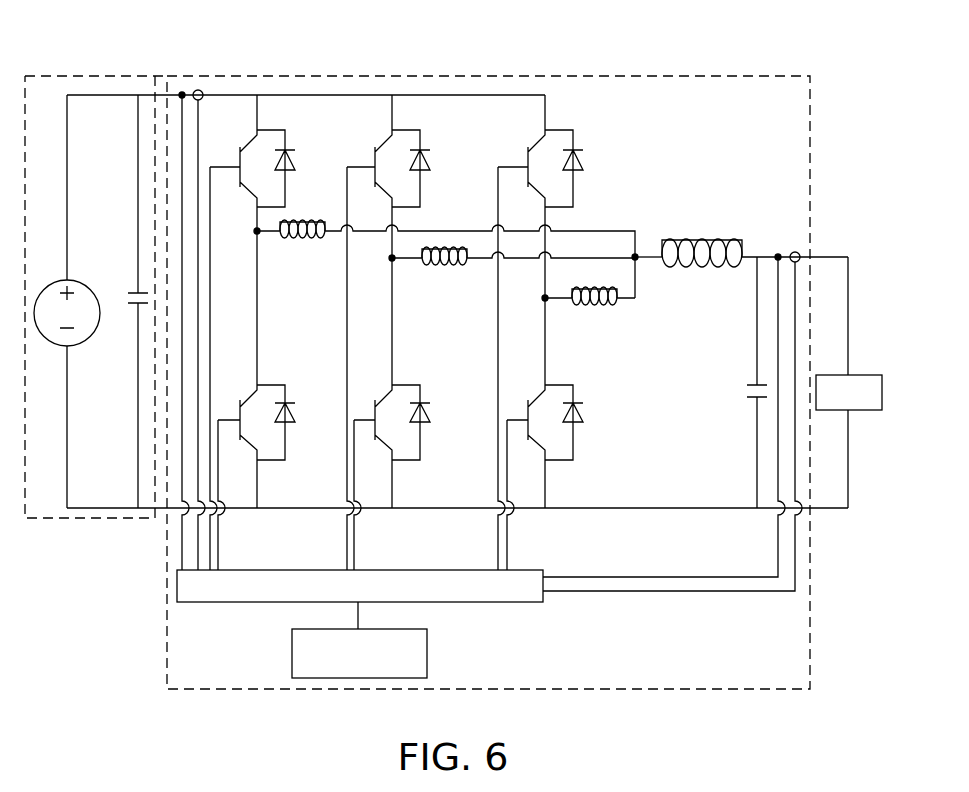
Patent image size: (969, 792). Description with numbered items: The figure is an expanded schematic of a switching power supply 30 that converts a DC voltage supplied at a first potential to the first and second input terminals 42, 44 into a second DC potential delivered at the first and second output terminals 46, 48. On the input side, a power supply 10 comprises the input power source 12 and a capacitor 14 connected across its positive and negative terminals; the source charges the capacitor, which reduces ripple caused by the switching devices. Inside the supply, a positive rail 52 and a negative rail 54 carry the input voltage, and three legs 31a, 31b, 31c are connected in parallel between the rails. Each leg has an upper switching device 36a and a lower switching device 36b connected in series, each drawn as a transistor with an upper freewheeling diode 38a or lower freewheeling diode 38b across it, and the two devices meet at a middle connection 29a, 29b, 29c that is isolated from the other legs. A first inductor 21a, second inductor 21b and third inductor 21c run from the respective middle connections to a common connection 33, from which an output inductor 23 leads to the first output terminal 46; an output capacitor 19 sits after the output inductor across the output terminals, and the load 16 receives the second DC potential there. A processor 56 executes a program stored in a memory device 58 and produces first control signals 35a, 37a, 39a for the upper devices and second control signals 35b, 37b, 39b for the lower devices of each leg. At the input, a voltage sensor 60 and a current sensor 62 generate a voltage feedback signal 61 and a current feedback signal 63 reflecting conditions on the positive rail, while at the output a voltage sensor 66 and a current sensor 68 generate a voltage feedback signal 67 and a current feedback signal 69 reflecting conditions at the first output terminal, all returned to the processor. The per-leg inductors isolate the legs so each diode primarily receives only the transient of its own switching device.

The power supply 10 is at (95, 76).
The input power source 12 is at (47, 286).
The capacitor 14 is at (135, 291).
The load 16 is at (865, 374).
The output capacitor 19 is at (751, 403).
The first inductor 21a is at (309, 218).
The second inductor 21b is at (439, 270).
The third inductor 21c is at (586, 310).
The output inductor 23 is at (701, 233).
The middle connection of the first leg 29a is at (249, 232).
The middle connection of the second leg 29b is at (387, 259).
The middle connection of the third leg 29c is at (539, 299).
The switching power supply 30 is at (712, 75).
The first leg 31a is at (258, 91).
The second leg 31b is at (393, 91).
The third leg 31c is at (546, 91).
The common connection 33 is at (640, 251).
The first control signal 35a is at (219, 547).
The second control signal 35b is at (220, 552).
The upper switching device 36a is at (248, 149).
The lower switching device 36b is at (248, 396).
The first control signal 37a is at (345, 545).
The second control signal 37b is at (357, 545).
The upper freewheeling diode 38a is at (291, 156).
The lower freewheeling diode 38b is at (297, 413).
The first control signal 39a is at (496, 545).
The second control signal 39b is at (510, 545).
The first input terminal 42 is at (165, 91).
The second input terminal 44 is at (152, 521).
The first output terminal 46 is at (812, 256).
The second output terminal 48 is at (816, 512).
The positive rail 52 is at (322, 94).
The negative rail 54 is at (292, 506).
The processor 56 is at (485, 603).
The memory device 58 is at (430, 651).
The voltage sensor 60 is at (183, 91).
The voltage feedback signal 61 is at (180, 150).
The current sensor 62 is at (200, 89).
The current feedback signal 63 is at (200, 107).
The voltage sensor 66 is at (777, 251).
The voltage feedback signal 67 is at (663, 577).
The current sensor 68 is at (795, 250).
The current feedback signal 69 is at (671, 592).